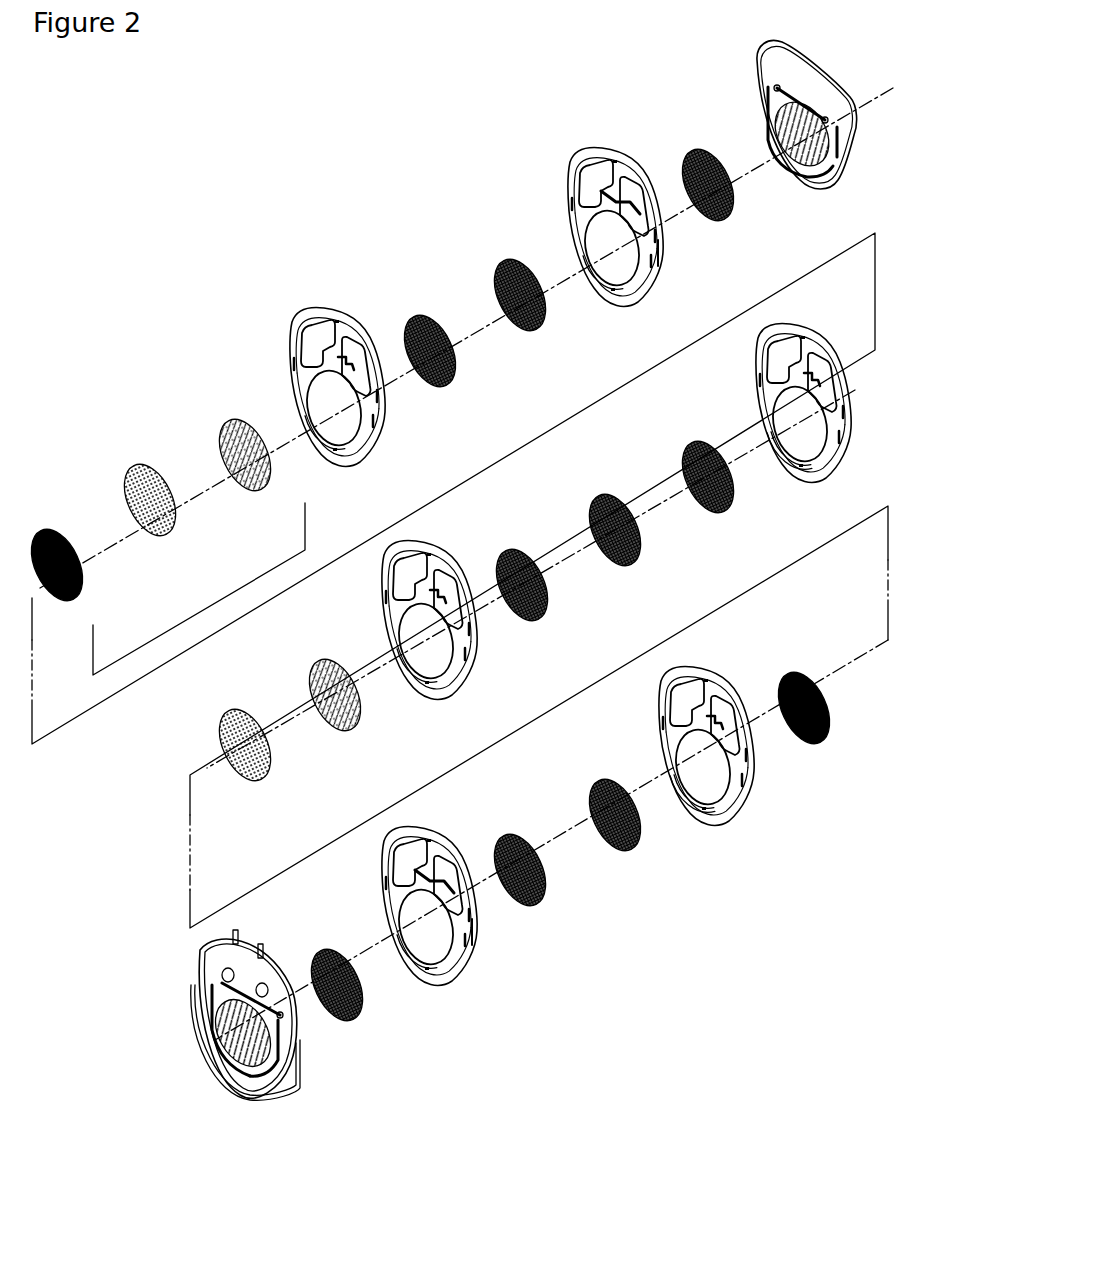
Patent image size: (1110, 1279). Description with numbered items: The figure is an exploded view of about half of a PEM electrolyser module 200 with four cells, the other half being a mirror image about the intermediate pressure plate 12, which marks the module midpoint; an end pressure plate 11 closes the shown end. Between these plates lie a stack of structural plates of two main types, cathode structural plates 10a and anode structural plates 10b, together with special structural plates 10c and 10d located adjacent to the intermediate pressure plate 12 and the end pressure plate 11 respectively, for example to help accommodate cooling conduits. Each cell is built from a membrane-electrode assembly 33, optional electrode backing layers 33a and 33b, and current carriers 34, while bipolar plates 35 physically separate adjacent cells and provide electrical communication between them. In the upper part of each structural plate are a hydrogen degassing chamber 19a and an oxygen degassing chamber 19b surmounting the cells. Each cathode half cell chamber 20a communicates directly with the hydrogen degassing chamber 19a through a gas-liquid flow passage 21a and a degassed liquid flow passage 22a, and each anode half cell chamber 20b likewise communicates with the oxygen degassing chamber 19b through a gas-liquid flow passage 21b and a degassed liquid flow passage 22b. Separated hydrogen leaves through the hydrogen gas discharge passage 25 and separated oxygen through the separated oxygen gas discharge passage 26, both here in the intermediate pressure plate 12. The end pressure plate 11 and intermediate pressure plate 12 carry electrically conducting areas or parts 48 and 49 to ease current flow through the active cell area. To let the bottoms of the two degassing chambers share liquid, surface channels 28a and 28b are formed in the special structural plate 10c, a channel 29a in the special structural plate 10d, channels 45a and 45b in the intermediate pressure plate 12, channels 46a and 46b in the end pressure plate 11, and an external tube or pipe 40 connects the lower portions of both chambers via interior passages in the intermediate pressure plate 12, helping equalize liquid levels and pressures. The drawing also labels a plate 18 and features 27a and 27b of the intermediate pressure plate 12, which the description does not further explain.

The PEM electrolyser module 200 is at (462, 564).
The end pressure plate 11 is at (840, 190).
The intermediate pressure plate 12 is at (240, 1075).
The plate 18 is at (199, 589).
The cathode structural plate 10a is at (725, 815).
The anode structural plate 10b is at (415, 680).
The special structural plate 10c is at (475, 935).
The special structural plate 10d is at (660, 245).
The hydrogen degassing chamber 19a is at (415, 865).
The oxygen degassing chamber 19b is at (460, 875).
The cathode half cell chamber 20a is at (735, 775).
The anode half cell chamber 20b is at (445, 660).
The gas-liquid flow passage 21a is at (707, 720).
The gas-liquid flow passage 21b is at (430, 595).
The degassed liquid flow passage 22a is at (675, 760).
The degassed liquid flow passage 22b is at (465, 660).
The hydrogen gas discharge passage 25 is at (262, 948).
The separated oxygen gas discharge passage 26 is at (238, 933).
The hole 27a is at (222, 975).
The hook 27b is at (285, 1022).
The liquid communication passage feature 28a is at (415, 882).
The liquid communication passage feature 28b is at (472, 935).
The liquid communication passage feature 29a is at (602, 203).
The membrane-electrode assembly 33 is at (270, 770).
The electrode backing layer 33a is at (828, 740).
The electrode backing layer 33b is at (355, 725).
The current carrier 34 is at (645, 845).
The bipolar plate 35 is at (550, 895).
The tube or pipe 40 is at (200, 1040).
The liquid communication passage feature 45a is at (210, 1010).
The liquid communication passage feature 45b is at (258, 1078).
The liquid communication passage feature 46a is at (815, 110).
The liquid communication passage feature 46b is at (790, 162).
The electrically conducting area 48 is at (790, 95).
The electrically conducting area 49 is at (290, 1075).